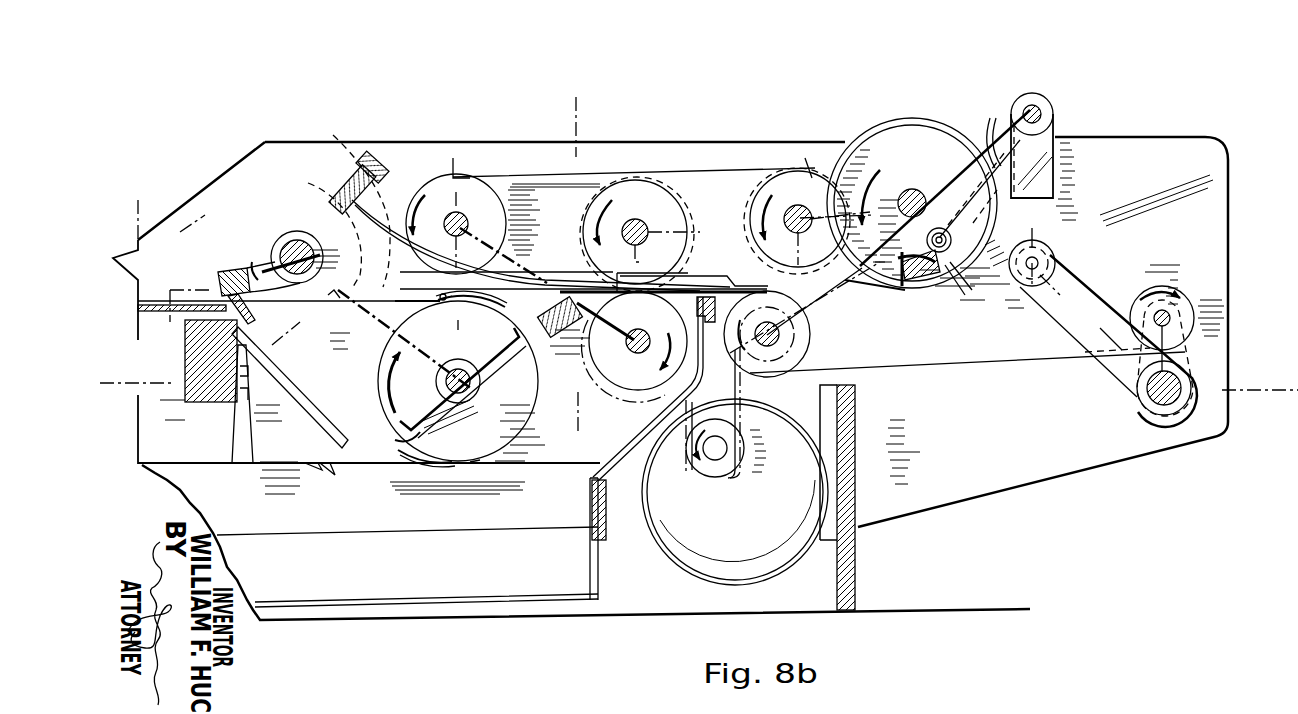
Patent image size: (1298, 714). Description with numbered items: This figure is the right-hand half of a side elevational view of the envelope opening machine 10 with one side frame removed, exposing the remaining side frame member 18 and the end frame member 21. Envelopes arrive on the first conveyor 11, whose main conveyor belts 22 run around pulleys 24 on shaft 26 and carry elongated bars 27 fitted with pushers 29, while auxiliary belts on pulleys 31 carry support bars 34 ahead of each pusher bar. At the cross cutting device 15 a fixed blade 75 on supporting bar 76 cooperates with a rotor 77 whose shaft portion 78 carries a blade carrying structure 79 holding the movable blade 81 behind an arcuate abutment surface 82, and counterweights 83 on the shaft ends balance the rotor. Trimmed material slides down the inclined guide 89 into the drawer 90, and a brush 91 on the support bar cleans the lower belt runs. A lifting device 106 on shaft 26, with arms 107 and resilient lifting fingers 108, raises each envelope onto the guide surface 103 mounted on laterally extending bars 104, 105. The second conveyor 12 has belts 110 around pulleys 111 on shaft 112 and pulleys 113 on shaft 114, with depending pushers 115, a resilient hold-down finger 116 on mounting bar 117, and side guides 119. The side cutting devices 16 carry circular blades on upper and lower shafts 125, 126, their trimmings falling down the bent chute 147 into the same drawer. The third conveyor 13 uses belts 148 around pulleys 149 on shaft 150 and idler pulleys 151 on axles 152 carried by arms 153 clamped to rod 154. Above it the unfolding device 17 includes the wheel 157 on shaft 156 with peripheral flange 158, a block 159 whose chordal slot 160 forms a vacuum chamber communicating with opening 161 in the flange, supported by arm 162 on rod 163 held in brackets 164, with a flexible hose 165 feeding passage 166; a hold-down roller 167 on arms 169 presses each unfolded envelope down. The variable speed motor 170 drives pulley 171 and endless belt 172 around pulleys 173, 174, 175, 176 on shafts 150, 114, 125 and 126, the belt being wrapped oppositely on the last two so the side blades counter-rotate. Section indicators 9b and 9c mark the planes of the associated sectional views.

The envelope opening machine 10 is at (553, 113).
The first conveyor 11 is at (388, 468).
The second conveyor 12 is at (597, 160).
The third conveyor 13 is at (995, 365).
The cross cutting device 15 is at (262, 212).
The side cutting devices 16 is at (590, 372).
The unfolding device 17 is at (170, 252).
The side frame member 18 is at (1122, 142).
The end frame member 21 is at (856, 496).
The main conveyor belts 22 is at (290, 466).
The pulleys 24 is at (380, 372).
The shaft 26 is at (462, 386).
The elongated bars 27 is at (316, 470).
The pushers 29 is at (330, 308).
The pulleys 31 is at (376, 366).
The support bars 34 is at (446, 302).
The fixed blade 75 is at (178, 312).
The supporting bar 76 is at (222, 377).
The rotor 77 is at (300, 232).
The shaft portion 78 is at (305, 252).
The blade carrying structure 79 is at (282, 258).
The movable blade 81 is at (232, 268).
The arcuate surface 82 is at (250, 302).
The counterweights 83 is at (338, 135).
The inclined guide 89 is at (302, 400).
The drawer 90 is at (378, 600).
The brush 91 is at (246, 436).
The guide plate or surface 103 is at (510, 293).
The laterally extending bar 104 is at (560, 338).
The laterally extending bar 105 is at (713, 414).
The lifting device 106 is at (432, 440).
The arms 107 is at (433, 412).
The lifting fingers 108 is at (470, 300).
The conveyor belts 110 is at (500, 177).
The pulleys 111 is at (498, 218).
The shaft 112 is at (445, 222).
The pulleys 113 is at (768, 203).
The shaft 114 is at (795, 217).
The pushers 115 is at (453, 160).
The resilient hold-down finger 116 is at (432, 262).
The lateral mounting bar 117 is at (376, 210).
The side guides 119 is at (688, 303).
The upper shaft 125 is at (635, 232).
The lower shaft 126 is at (632, 341).
The bent guide or chute 147 is at (592, 476).
The conveyor belts 148 is at (1060, 360).
The pulleys 149 is at (810, 335).
The shaft 150 is at (788, 349).
The idler pulleys 151 is at (1185, 310).
The axle 152 is at (1170, 321).
The arm 153 is at (1184, 356).
The transversely extending rod 154 is at (1150, 398).
The shaft 156 is at (912, 190).
The wheel 157 is at (900, 146).
The peripheral flange 158 is at (893, 124).
The block 159 is at (905, 285).
The chordal slot 160 is at (950, 262).
The opening 161 is at (925, 288).
The arm 162 is at (945, 232).
The rod 163 is at (1055, 112).
The brackets 164 is at (1052, 172).
The flexible hose 165 is at (988, 128).
The passage 166 is at (1019, 226).
The hold-down roller 167 is at (1052, 258).
The arms 169 is at (1063, 316).
The variable speed electric motor 170 is at (690, 540).
The drive pulley 171 is at (727, 466).
The endless belt 172 is at (748, 392).
The pulley 173 is at (808, 314).
The pulley 174 is at (720, 227).
The pulley 175 is at (662, 192).
The pulley 176 is at (624, 392).
The section line 9b- 9b is at (865, 190).
The section line 9c- 9c is at (637, 300).